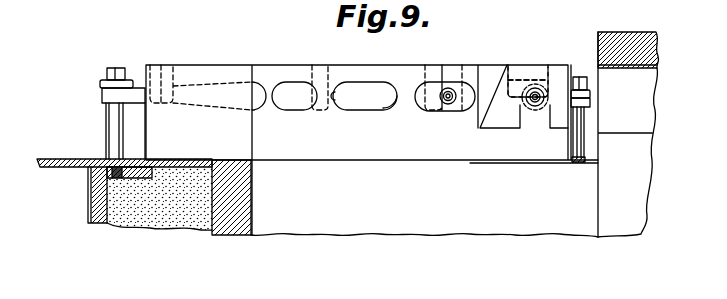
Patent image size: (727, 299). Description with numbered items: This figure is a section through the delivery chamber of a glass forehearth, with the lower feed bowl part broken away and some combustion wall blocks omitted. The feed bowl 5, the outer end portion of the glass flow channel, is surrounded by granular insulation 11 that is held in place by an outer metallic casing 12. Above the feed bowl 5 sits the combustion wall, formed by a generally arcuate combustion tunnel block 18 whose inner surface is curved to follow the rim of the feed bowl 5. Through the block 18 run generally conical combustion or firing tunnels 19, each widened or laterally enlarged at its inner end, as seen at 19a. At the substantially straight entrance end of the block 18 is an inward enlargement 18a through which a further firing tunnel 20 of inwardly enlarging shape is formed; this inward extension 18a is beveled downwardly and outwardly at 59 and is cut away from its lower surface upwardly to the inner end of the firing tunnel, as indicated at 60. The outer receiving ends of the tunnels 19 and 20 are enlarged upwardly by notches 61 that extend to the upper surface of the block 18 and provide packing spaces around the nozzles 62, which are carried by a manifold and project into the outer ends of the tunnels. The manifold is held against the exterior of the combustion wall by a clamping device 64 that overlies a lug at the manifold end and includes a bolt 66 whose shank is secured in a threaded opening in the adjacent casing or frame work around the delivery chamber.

The feed bowl 5 is at (235, 237).
The granular insulation 11 is at (150, 215).
The outer metallic casing 12 is at (88, 207).
The combustion tunnel block 18 is at (373, 68).
The inward enlargement of block end portion 18a is at (518, 72).
The combustion tunnel 19 is at (373, 88).
The laterally enlarged inner end of combustion tunnel 19a is at (388, 108).
The combustion tunnel in enlarged end portion 20 is at (544, 98).
The bevel 59 is at (498, 120).
The cut-away portion 60 is at (545, 108).
The notch 61 is at (540, 67).
The nozzle 62 is at (533, 100).
The clamping device 64 is at (102, 90).
The bolt 66 is at (110, 77).